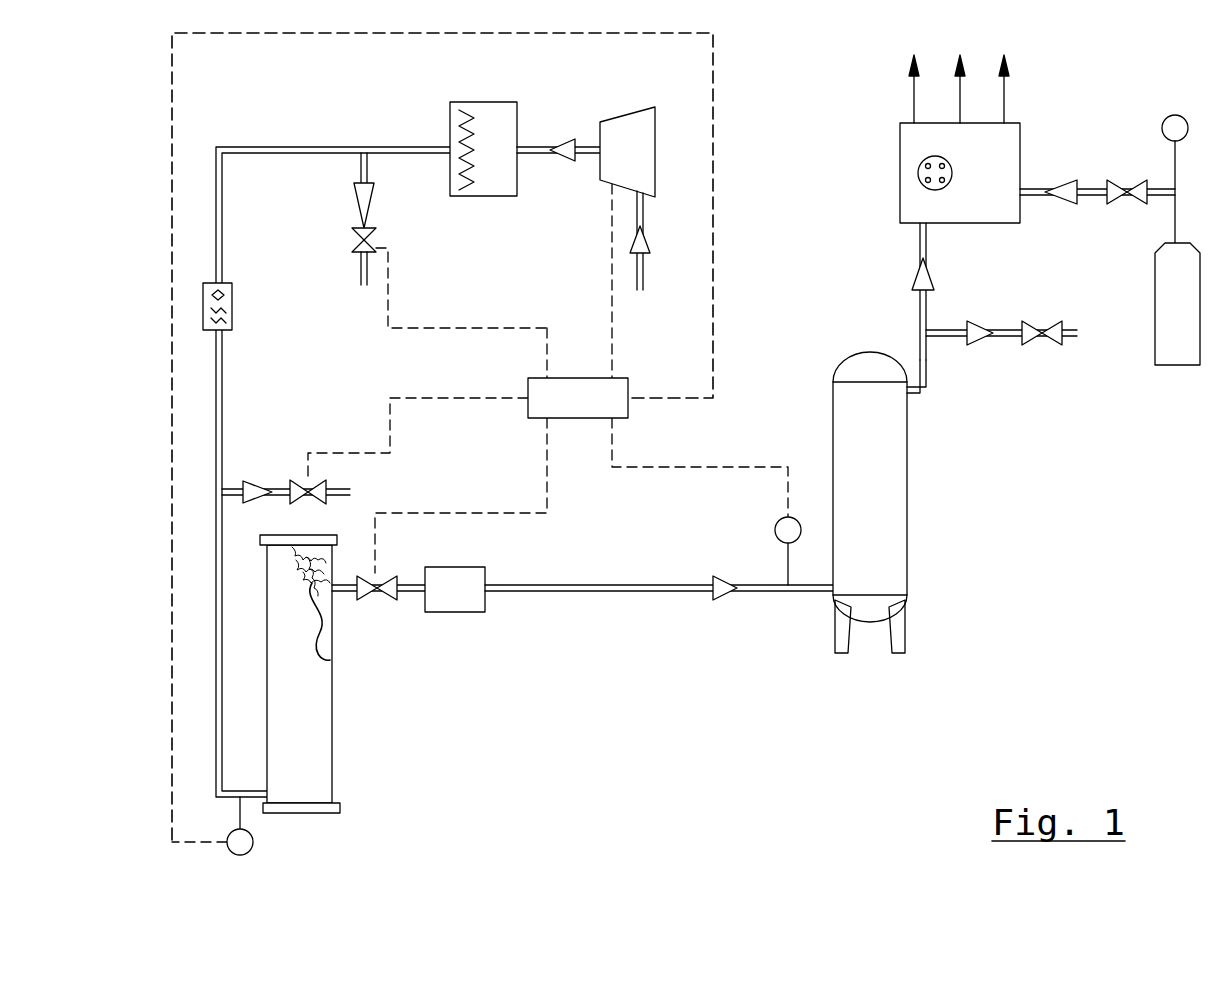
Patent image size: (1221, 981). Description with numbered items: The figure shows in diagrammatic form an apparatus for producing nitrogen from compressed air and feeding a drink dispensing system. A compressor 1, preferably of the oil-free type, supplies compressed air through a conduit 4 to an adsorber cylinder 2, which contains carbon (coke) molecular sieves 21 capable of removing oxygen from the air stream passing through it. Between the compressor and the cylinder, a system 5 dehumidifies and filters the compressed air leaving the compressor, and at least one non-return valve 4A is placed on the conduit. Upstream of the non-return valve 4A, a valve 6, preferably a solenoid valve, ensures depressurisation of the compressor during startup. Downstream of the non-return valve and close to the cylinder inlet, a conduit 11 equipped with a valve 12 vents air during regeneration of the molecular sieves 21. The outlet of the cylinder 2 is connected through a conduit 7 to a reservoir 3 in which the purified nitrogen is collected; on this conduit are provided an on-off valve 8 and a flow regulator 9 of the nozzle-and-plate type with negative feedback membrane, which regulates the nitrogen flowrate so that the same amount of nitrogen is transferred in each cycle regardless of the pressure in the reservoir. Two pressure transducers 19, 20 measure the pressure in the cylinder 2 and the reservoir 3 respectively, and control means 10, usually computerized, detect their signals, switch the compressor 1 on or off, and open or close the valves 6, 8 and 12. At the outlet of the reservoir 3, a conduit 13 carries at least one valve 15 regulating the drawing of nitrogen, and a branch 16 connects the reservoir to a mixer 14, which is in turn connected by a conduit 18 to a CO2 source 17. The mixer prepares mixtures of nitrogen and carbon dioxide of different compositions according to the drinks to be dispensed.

The compressor 1 is at (647, 142).
The adsorber cylinder 2 is at (325, 713).
The reservoir 3 is at (905, 508).
The conduit 4 is at (256, 147).
The non-return valve 4A is at (232, 305).
The dehumidifying and filtering system 5 is at (510, 108).
The valve 6 is at (360, 240).
The conduit 7 is at (568, 592).
The on-off valve 8 is at (392, 595).
The flow regulator 9 is at (458, 613).
The control means 10 is at (627, 408).
The conduit 11 is at (246, 488).
The valve 12 is at (300, 485).
The conduit 13 is at (928, 380).
The mixer 14 is at (900, 132).
The valve 15 is at (1050, 345).
The branch 16 is at (920, 240).
The CO2 source 17 is at (1168, 362).
The conduit 18 is at (1090, 186).
The pressure transducer 19 is at (253, 845).
The pressure transducer 20 is at (775, 530).
The molecular sieves 21 is at (330, 660).